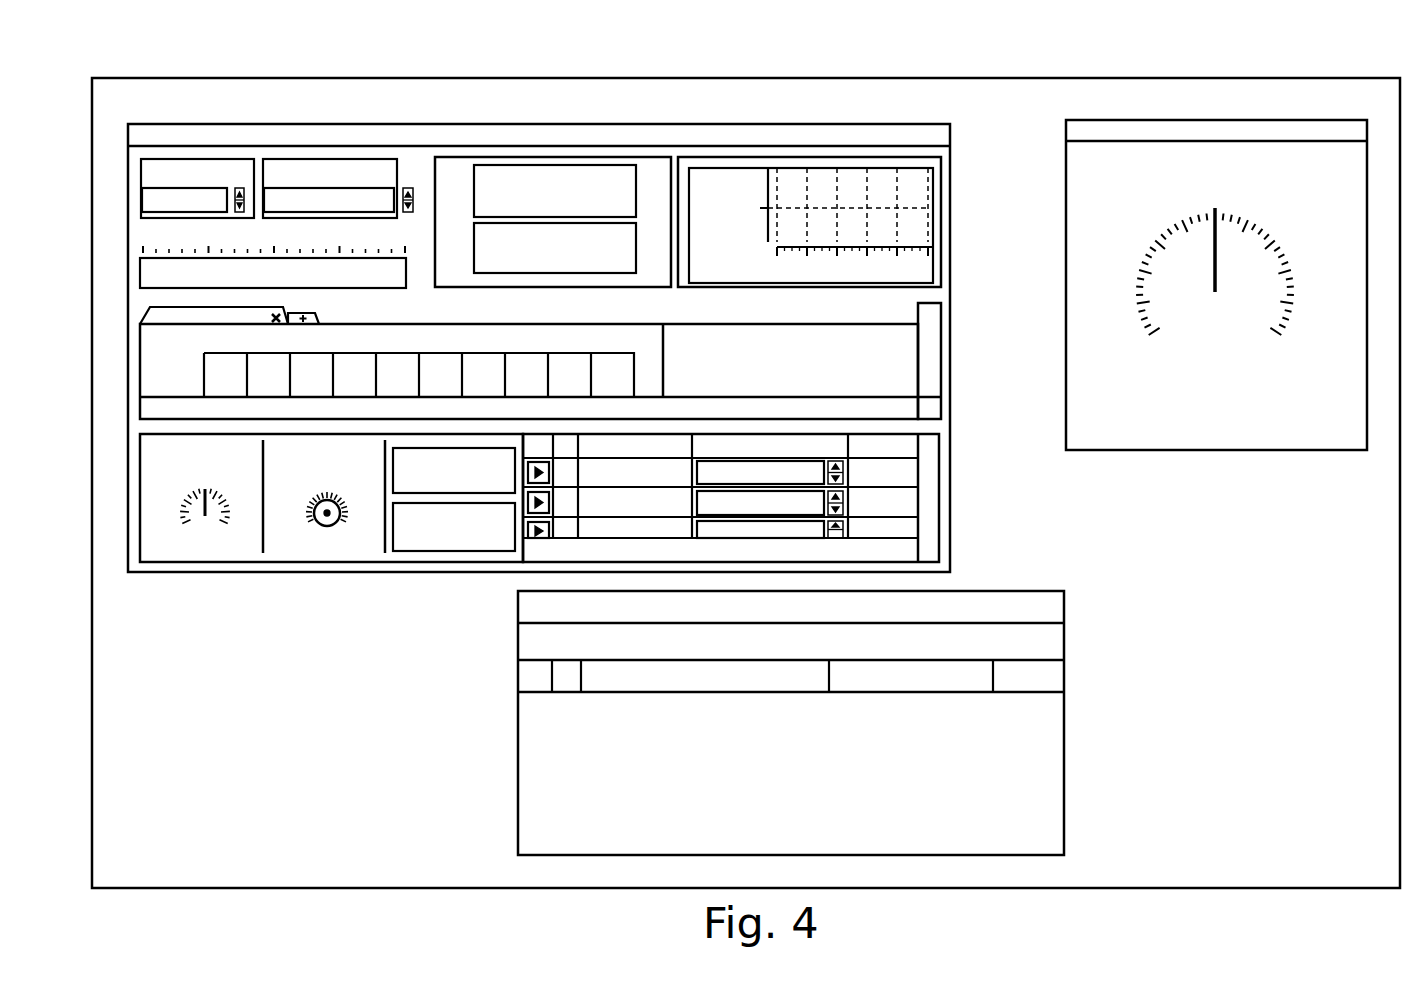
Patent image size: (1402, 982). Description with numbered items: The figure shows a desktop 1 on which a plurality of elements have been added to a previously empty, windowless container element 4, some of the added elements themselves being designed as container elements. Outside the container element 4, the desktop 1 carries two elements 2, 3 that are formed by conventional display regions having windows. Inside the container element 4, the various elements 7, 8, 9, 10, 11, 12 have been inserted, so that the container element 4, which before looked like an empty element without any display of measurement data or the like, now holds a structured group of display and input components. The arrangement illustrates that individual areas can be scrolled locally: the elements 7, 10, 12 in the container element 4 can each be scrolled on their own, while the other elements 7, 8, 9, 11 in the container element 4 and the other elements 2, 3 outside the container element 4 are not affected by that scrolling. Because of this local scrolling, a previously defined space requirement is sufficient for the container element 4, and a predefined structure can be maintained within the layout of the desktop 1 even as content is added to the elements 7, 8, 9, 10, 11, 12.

The desktop 1 is at (349, 851).
The element 2 is at (1065, 767).
The element 3 is at (1265, 450).
The container element 4 is at (952, 443).
The element 7 is at (268, 158).
The element 8 is at (540, 152).
The element 9 is at (745, 157).
The element 10 is at (150, 373).
The element 11 is at (160, 563).
The element 12 is at (530, 572).